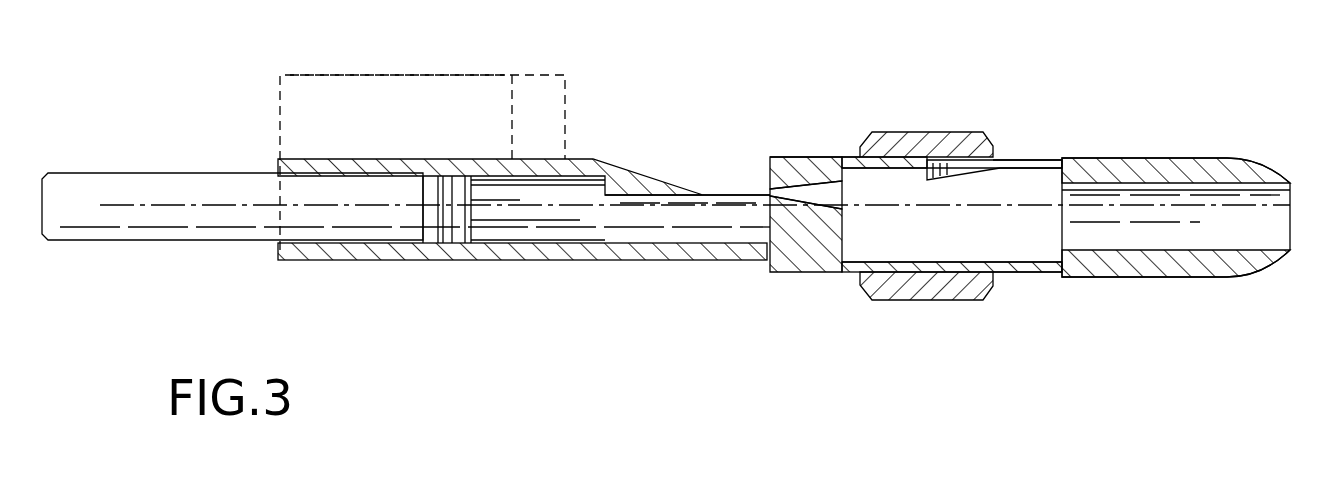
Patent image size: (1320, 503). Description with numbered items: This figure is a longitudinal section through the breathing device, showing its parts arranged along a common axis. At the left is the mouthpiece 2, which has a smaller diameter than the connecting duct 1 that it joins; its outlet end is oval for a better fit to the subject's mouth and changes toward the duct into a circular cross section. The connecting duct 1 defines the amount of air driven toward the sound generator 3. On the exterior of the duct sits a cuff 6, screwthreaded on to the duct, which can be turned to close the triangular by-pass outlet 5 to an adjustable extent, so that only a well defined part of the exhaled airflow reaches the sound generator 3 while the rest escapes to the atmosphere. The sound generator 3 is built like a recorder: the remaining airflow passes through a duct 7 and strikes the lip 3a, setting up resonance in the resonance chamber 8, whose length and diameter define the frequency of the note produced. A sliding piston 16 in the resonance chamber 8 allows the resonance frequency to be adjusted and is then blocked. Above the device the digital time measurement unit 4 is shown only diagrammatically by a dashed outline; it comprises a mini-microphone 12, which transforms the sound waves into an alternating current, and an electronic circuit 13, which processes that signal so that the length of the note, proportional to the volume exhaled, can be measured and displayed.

The connecting duct 1 is at (652, 260).
The mouthpiece 2 is at (1177, 278).
The sound generator 3 is at (736, 150).
The lip 3a is at (688, 192).
The digital time measurement unit 4 is at (326, 69).
The triangular by-pass outlet 5 is at (1018, 167).
The cuff 6 is at (938, 138).
The duct 7 is at (818, 200).
The resonance chamber 8 is at (572, 232).
The mini-microphone 12 is at (540, 95).
The electronic circuit 13 is at (370, 95).
The sliding piston 16 is at (203, 224).